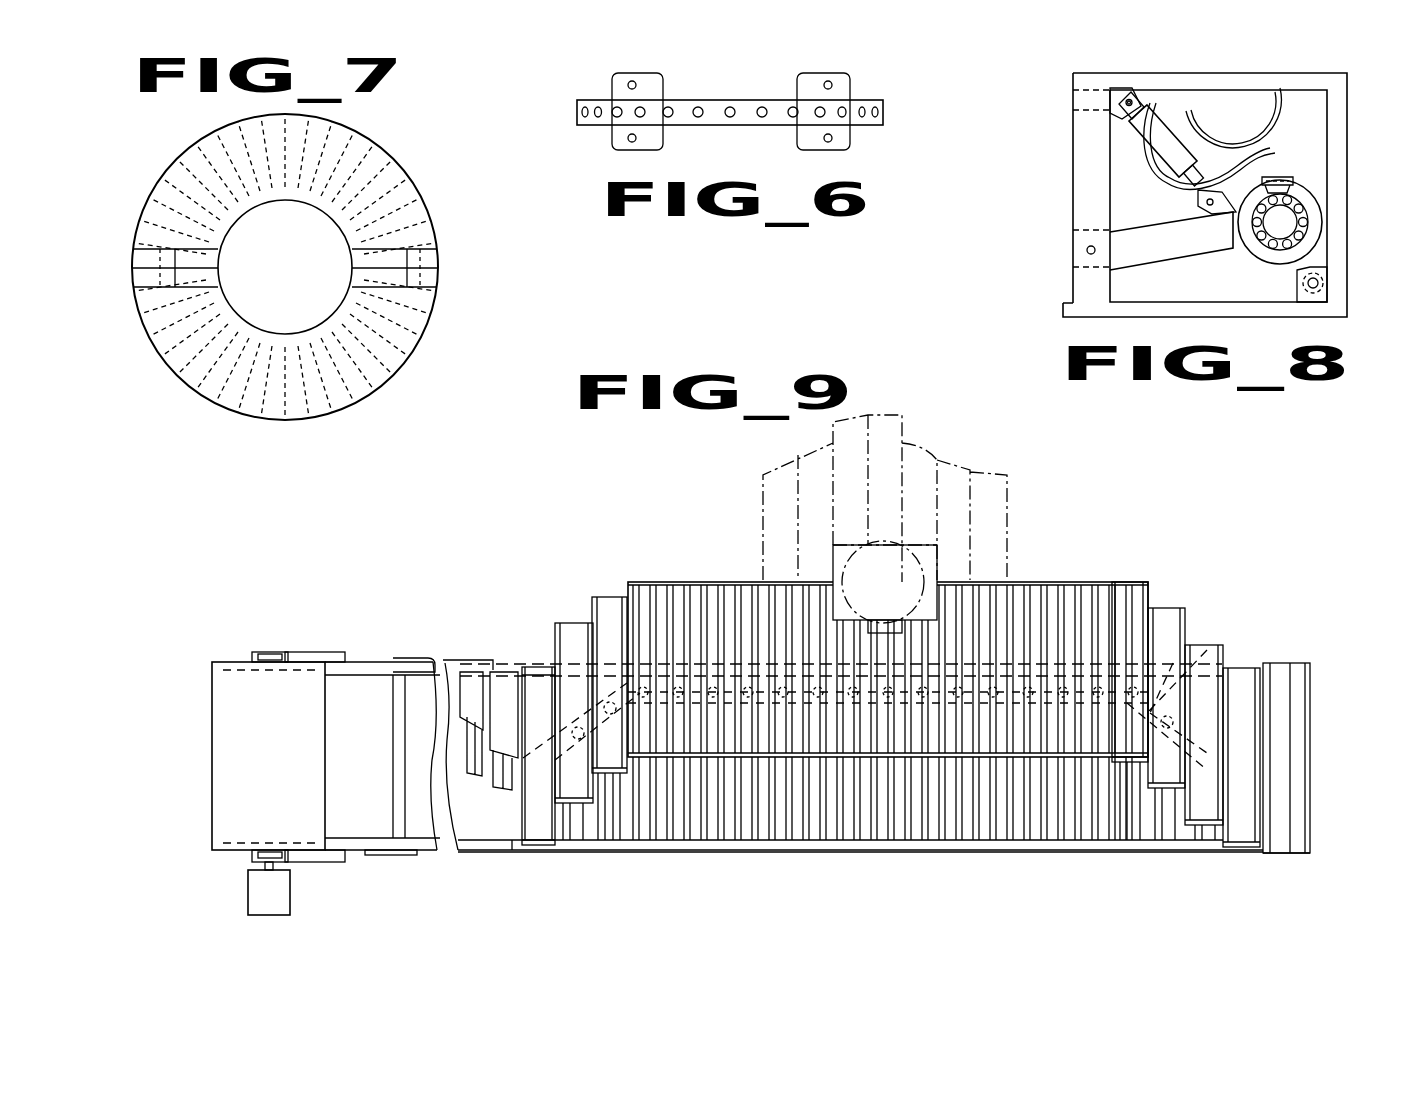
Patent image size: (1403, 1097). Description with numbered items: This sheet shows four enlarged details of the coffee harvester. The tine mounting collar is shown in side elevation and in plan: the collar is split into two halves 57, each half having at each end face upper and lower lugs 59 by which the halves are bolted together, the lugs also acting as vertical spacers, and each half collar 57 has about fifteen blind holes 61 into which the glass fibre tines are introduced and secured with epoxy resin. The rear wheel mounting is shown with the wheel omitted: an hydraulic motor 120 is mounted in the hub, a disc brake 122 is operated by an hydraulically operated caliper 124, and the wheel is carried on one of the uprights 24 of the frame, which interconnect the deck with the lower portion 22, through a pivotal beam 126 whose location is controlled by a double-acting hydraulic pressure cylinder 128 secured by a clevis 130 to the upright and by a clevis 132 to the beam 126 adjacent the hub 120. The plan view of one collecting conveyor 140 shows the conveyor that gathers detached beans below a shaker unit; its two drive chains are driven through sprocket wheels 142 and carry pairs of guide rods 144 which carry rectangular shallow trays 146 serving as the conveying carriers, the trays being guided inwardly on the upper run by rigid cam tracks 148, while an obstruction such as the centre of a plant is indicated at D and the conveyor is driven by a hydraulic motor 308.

In FIG. 8, the lower portion 22 is at (1068, 312).
In FIG. 8, the upright 24 is at (1073, 193).
In FIG. 7, the collar half 57 is at (315, 191).
In FIG. 6, the collar half 57 is at (866, 99).
In FIG. 7, the lug 59 is at (352, 280).
In FIG. 6, the lug 59 is at (797, 84).
In FIG. 7, the blind hole 61 is at (381, 166).
In FIG. 6, the blind hole 61 is at (618, 106).
In FIG. 8, the hydraulic motor 120 is at (1292, 229).
In FIG. 8, the disc brake 122 is at (1312, 210).
In FIG. 8, the caliper 124 is at (1293, 180).
In FIG. 8, the pivotal beam 126 is at (1158, 258).
In FIG. 8, the double-acting hydraulic pressure cylinder 128 is at (1165, 129).
In FIG. 8, the clevis 130 is at (1129, 93).
In FIG. 8, the clevis 132 is at (1200, 203).
In FIG. 9, the collecting conveyor 140 is at (1013, 522).
In FIG. 9, the sprocket wheel 142 is at (300, 668).
In FIG. 9, the guide rod 144 is at (797, 863).
In FIG. 9, the tray 146 is at (680, 590).
In FIG. 9, the cam track 148 is at (1188, 643).
In FIG. 9, the hydraulic motor 308 is at (248, 895).
In FIG. 9, the obstruction D is at (920, 563).